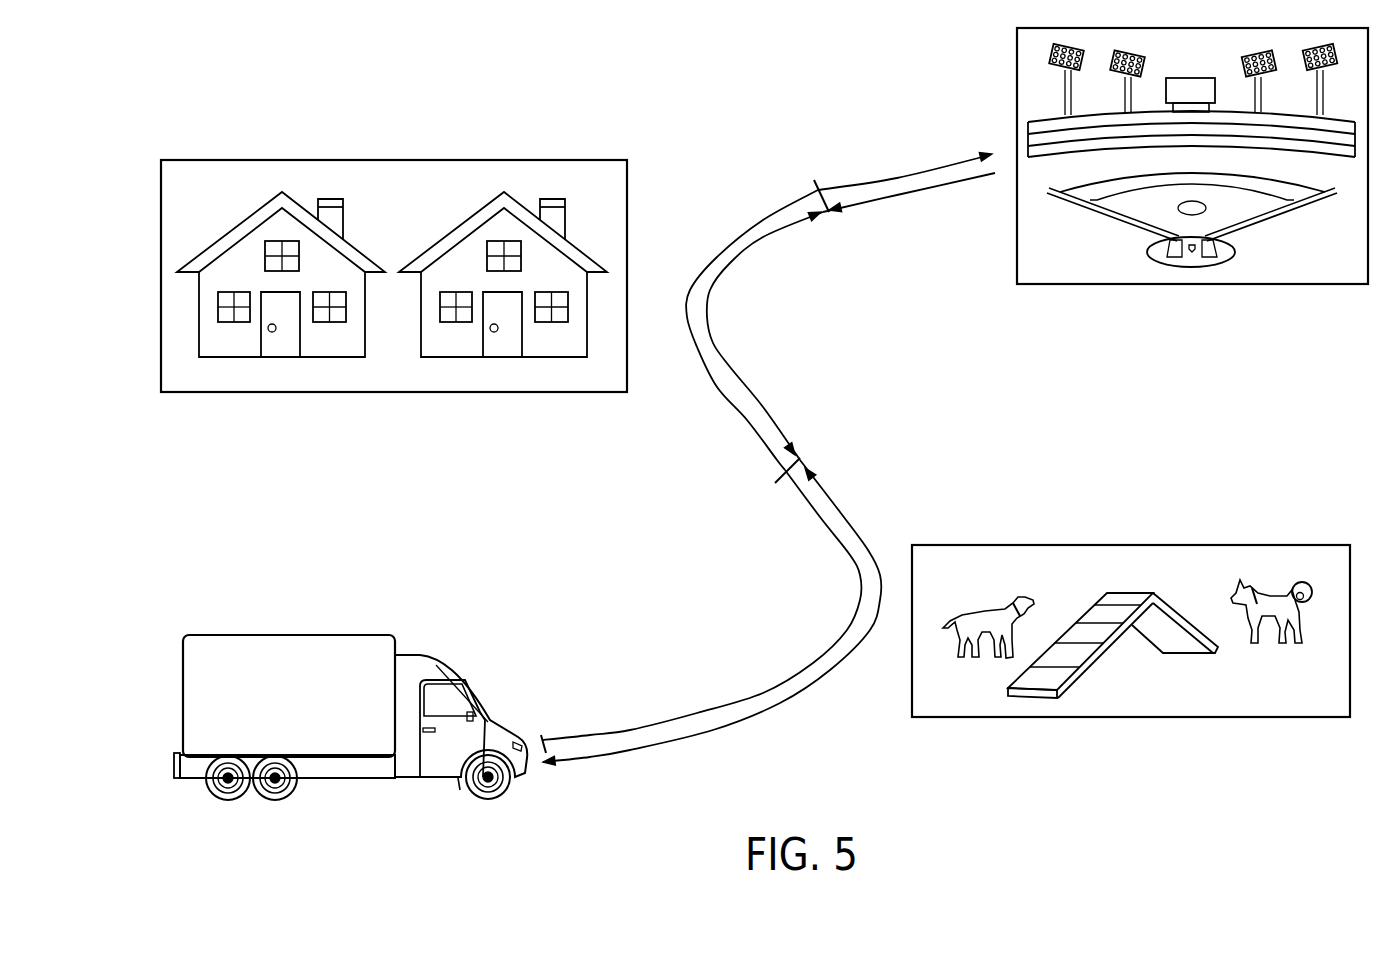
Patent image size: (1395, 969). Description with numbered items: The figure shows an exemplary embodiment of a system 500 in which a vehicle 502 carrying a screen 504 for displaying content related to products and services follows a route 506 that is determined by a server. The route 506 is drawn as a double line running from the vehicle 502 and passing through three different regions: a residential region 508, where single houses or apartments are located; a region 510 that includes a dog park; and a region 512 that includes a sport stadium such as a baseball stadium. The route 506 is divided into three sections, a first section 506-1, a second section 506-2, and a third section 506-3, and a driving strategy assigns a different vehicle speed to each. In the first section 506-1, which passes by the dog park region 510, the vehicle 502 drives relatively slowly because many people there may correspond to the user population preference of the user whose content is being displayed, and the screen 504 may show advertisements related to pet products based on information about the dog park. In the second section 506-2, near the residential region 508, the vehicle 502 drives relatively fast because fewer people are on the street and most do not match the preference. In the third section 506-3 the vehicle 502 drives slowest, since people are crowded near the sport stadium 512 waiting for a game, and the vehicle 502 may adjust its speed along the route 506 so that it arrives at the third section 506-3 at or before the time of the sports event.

The system 500 is at (717, 414).
The vehicle 502 is at (350, 717).
The screen 504 is at (315, 709).
The route 506 is at (768, 466).
The first section 506-1 is at (743, 717).
The second section 506-2 is at (733, 367).
The third section 506-3 is at (903, 192).
The residential region 508 is at (160, 343).
The dog park region 510 is at (1135, 545).
The sport stadium region 512 is at (1173, 285).